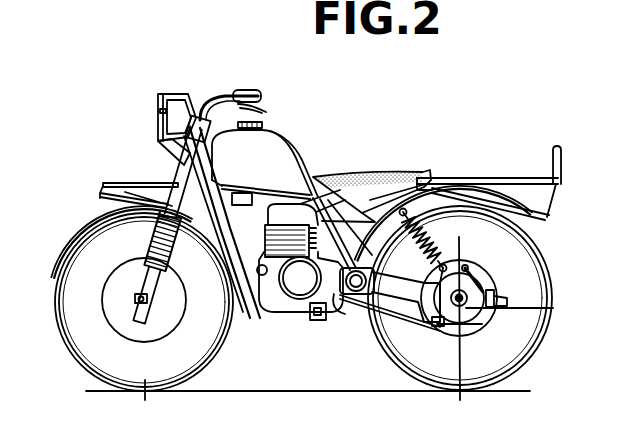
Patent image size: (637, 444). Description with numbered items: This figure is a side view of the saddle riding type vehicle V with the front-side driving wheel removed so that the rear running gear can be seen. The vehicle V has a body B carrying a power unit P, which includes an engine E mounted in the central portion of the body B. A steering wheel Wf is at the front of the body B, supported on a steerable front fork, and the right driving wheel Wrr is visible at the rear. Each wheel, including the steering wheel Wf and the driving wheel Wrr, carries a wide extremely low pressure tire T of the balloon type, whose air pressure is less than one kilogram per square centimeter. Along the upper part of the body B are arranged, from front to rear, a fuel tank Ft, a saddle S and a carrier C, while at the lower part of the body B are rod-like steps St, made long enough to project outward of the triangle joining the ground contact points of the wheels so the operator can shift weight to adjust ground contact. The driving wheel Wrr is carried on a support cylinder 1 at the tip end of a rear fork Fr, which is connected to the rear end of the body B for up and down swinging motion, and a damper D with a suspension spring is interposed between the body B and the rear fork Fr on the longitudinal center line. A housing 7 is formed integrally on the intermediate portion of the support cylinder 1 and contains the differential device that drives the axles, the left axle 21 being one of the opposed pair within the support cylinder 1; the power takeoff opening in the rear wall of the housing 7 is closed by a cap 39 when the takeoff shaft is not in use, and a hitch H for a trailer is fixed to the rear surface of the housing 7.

The saddle riding type vehicle V is at (372, 112).
The steering wheel Wf is at (78, 332).
The right driving wheel Wrr is at (521, 328).
The rear fork Fr is at (192, 166).
The fuel tank Ft is at (273, 153).
The engine E is at (288, 200).
The saddle S is at (372, 185).
The carrier C is at (519, 182).
The body B is at (238, 235).
The step St is at (315, 322).
The power unit P is at (334, 299).
The damper D is at (440, 236).
The housing 7 is at (477, 283).
The cap 39 is at (495, 297).
The hitch H is at (521, 312).
The support cylinder 1 is at (452, 325).
The dimension 2l 21 is at (458, 342).
The tire T is at (304, 403).